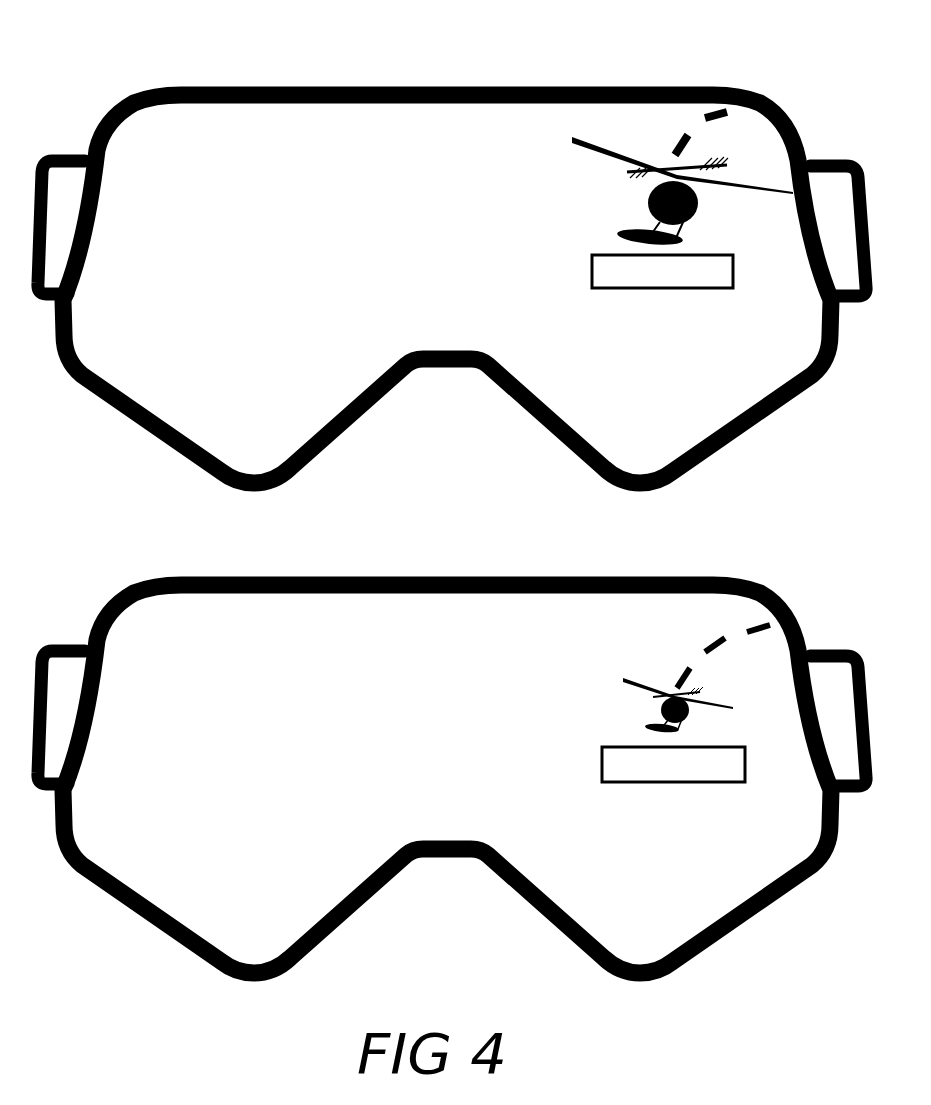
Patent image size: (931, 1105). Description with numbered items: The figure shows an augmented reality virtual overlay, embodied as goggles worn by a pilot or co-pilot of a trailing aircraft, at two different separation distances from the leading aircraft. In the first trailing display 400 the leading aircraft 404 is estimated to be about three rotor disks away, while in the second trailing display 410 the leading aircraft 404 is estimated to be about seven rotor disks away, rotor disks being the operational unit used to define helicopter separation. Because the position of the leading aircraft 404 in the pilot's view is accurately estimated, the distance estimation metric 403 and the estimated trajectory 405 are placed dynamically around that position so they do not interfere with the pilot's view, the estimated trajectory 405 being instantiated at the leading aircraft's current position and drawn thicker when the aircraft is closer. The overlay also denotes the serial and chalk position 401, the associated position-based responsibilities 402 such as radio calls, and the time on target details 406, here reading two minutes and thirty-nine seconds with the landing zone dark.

The first trailing display 400 is at (496, 86).
The serial and chalk position 401 is at (178, 133).
The associated position-based responsibilities 402 is at (330, 157).
The distance estimation metric 403 is at (592, 272).
The leading aircraft 404 is at (630, 207).
The estimated trajectory 405 is at (680, 134).
The time on target details 406 is at (243, 330).
The second trailing display 410 is at (520, 577).